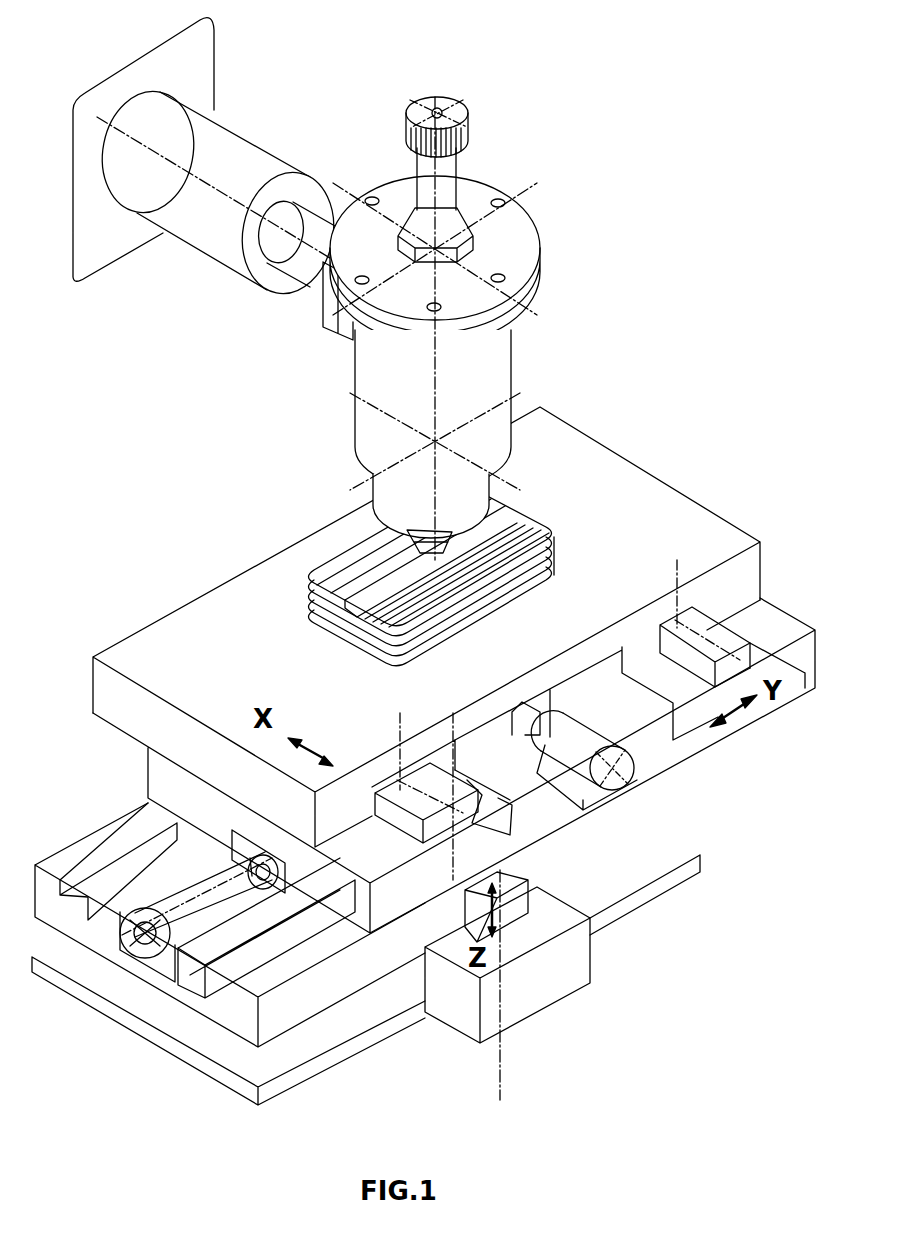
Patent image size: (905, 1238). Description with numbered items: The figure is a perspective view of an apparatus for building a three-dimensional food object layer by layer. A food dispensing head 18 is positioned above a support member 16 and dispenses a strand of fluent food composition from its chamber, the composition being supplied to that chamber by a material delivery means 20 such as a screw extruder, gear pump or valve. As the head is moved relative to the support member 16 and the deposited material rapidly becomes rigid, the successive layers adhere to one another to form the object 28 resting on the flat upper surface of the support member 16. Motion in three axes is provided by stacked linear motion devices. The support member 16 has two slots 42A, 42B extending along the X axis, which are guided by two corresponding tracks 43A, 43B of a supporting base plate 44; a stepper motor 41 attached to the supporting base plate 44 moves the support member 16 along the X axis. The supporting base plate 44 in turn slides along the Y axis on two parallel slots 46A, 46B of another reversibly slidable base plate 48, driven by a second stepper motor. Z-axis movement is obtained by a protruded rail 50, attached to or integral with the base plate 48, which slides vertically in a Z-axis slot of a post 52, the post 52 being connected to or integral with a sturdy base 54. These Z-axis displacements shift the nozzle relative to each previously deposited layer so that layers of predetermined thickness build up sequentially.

The support member 16 is at (640, 490).
The food dispensing head 18 is at (491, 380).
The material delivery means 20 is at (225, 153).
The object 28 is at (318, 572).
The stepper motor 41 is at (633, 790).
The slot 42A is at (658, 645).
The slot 42B is at (380, 803).
The track 43A is at (703, 623).
The track 43B is at (430, 777).
The supporting base plate 44 is at (802, 677).
The slot 46A is at (83, 897).
The slot 46B is at (212, 987).
The base plate 48 is at (242, 1017).
The protruded rail 50 is at (556, 925).
The post 52 is at (527, 997).
The base 54 is at (343, 1045).